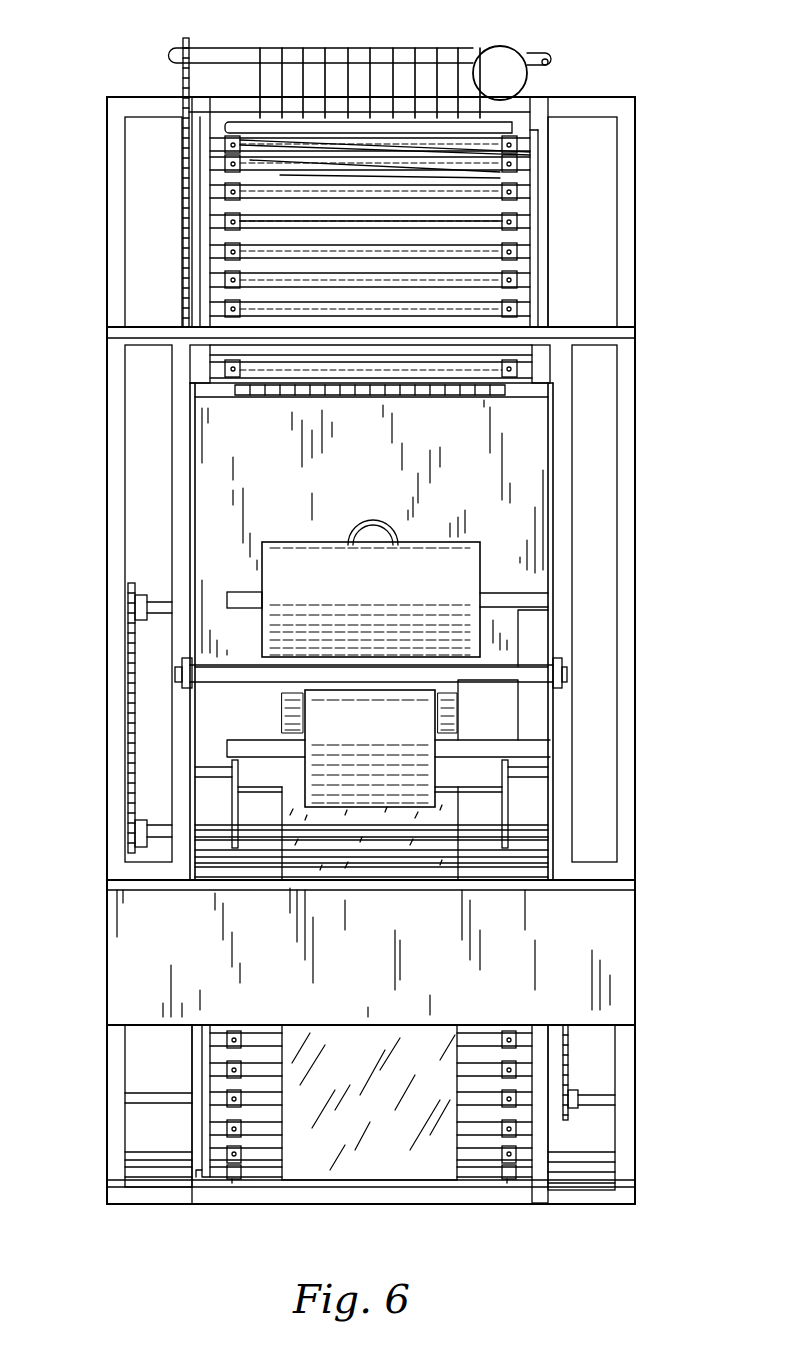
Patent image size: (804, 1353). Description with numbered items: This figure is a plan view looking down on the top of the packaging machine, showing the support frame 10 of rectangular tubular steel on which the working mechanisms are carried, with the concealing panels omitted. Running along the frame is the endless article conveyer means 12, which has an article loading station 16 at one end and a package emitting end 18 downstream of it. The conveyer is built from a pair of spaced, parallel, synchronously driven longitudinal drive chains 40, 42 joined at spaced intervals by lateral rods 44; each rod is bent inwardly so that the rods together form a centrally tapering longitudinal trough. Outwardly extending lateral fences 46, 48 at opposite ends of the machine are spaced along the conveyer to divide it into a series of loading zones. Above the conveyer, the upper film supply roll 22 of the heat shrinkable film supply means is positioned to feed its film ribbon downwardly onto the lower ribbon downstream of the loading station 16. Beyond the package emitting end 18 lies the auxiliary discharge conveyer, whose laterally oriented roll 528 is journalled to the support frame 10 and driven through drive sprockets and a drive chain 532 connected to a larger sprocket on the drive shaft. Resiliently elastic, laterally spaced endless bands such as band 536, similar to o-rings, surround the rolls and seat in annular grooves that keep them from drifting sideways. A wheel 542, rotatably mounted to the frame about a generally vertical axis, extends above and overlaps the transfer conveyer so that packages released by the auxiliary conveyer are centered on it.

The support frame 10 is at (107, 223).
The endless article conveyer means 12 is at (470, 195).
The article loading station 16 is at (480, 1087).
The package emitting end 18 is at (615, 77).
The upper film supply roll 22 is at (413, 728).
The longitudinal drive chain 40 is at (535, 273).
The longitudinal drive chain 42 is at (203, 225).
The lateral rods 44 is at (280, 227).
The lateral fence 46 is at (262, 1173).
The lateral fence 48 is at (227, 128).
The roll 528 is at (545, 55).
The drive chain 532 is at (183, 72).
The endless band 536 is at (457, 73).
The wheel 542 is at (498, 60).